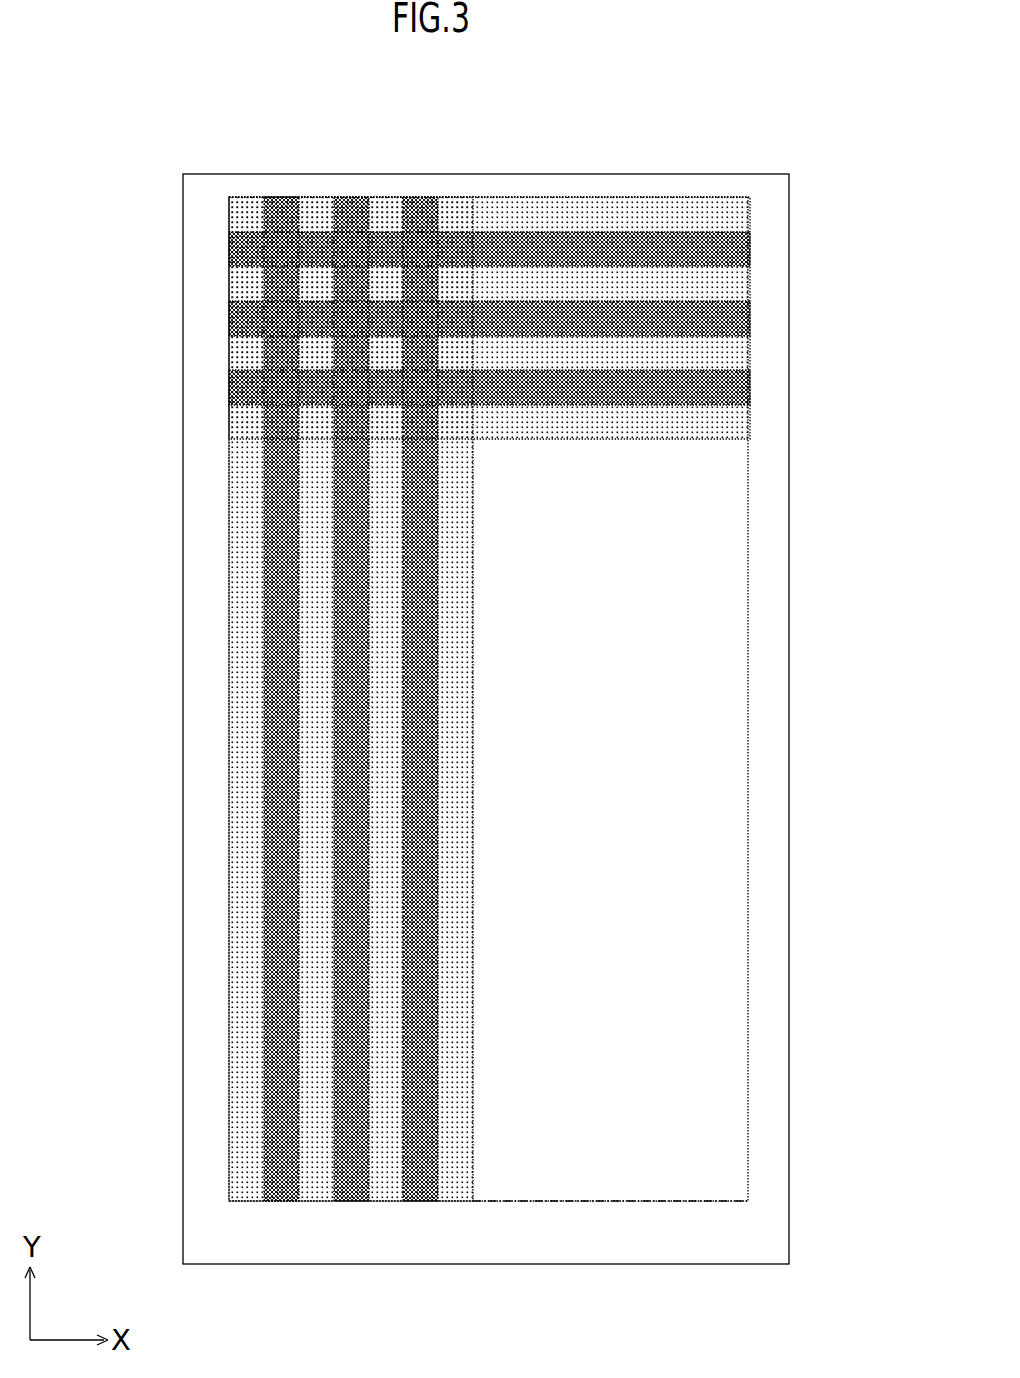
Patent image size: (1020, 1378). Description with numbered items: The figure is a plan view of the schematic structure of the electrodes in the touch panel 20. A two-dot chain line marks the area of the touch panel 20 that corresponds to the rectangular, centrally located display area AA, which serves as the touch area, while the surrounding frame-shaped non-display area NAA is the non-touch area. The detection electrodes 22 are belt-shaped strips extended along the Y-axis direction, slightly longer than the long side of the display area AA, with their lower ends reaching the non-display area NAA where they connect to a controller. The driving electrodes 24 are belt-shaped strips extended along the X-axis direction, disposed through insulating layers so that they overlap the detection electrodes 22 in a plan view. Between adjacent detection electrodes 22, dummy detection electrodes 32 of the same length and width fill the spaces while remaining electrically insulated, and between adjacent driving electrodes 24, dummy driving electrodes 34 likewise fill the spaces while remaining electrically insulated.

The touch panel 20 is at (757, 146).
The detection electrode 22 is at (345, 526).
The driving electrode 24 is at (660, 323).
The dummy detection electrode 32 is at (387, 637).
The dummy driving electrode 34 is at (557, 355).
The display area AA is at (676, 218).
The non-display area NAA is at (594, 188).